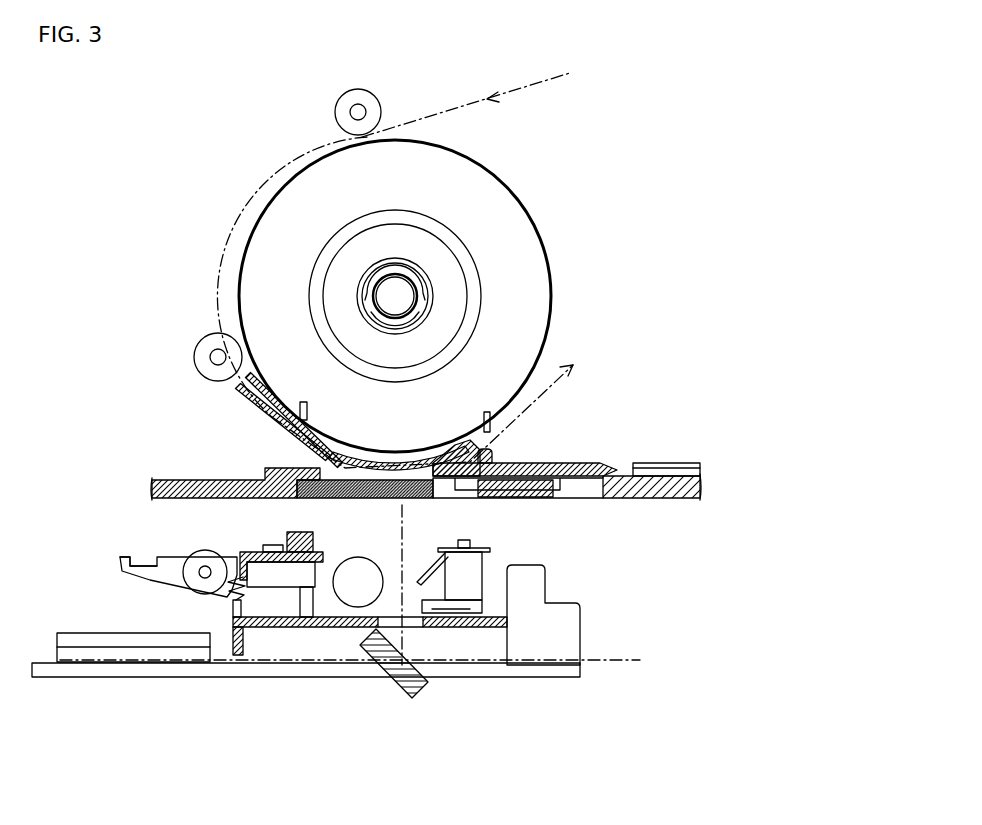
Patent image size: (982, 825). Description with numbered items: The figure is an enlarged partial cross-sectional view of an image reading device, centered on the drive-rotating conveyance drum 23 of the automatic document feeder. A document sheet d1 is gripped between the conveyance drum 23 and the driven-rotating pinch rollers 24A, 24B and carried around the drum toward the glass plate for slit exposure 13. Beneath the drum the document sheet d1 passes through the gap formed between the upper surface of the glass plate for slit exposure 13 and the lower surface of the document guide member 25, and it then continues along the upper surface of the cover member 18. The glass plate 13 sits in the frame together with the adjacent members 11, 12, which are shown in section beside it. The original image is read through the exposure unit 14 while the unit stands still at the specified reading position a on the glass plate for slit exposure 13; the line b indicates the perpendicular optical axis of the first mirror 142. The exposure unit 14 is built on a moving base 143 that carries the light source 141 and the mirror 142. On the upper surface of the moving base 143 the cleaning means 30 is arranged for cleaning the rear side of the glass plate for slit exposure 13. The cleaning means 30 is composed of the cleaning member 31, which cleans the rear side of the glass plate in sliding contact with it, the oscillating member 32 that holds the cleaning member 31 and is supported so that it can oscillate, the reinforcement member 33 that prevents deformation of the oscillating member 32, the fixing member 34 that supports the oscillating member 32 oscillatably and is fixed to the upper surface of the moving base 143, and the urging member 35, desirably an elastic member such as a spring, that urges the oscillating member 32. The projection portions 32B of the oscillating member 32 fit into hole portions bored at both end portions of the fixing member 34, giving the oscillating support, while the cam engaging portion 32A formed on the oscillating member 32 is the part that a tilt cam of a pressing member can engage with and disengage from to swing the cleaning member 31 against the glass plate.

The frame 11 is at (650, 498).
The block 12 is at (520, 498).
The glass plate for slit exposure 13 is at (347, 499).
The exposure unit 14 is at (352, 708).
The cover member 18 is at (558, 462).
The conveyance drum 23 is at (548, 248).
The pinch roller 24A is at (334, 114).
The pinch roller 24B is at (214, 332).
The document guide member 25 is at (430, 462).
The cleaning means 30 is at (86, 541).
The cleaning member 31 is at (300, 533).
The oscillating member 32 is at (126, 585).
The cam engaging portion 32A is at (128, 556).
The projection portion 32B is at (200, 567).
The reinforcement member 33 is at (243, 555).
The fixing member 34 is at (200, 593).
The urging member 35 is at (238, 630).
The light source 141 is at (335, 605).
The first mirror 142 is at (410, 700).
The moving base 143 is at (478, 630).
The reading position a is at (418, 490).
The optical axis b is at (404, 540).
The document sheet d1 is at (528, 90).